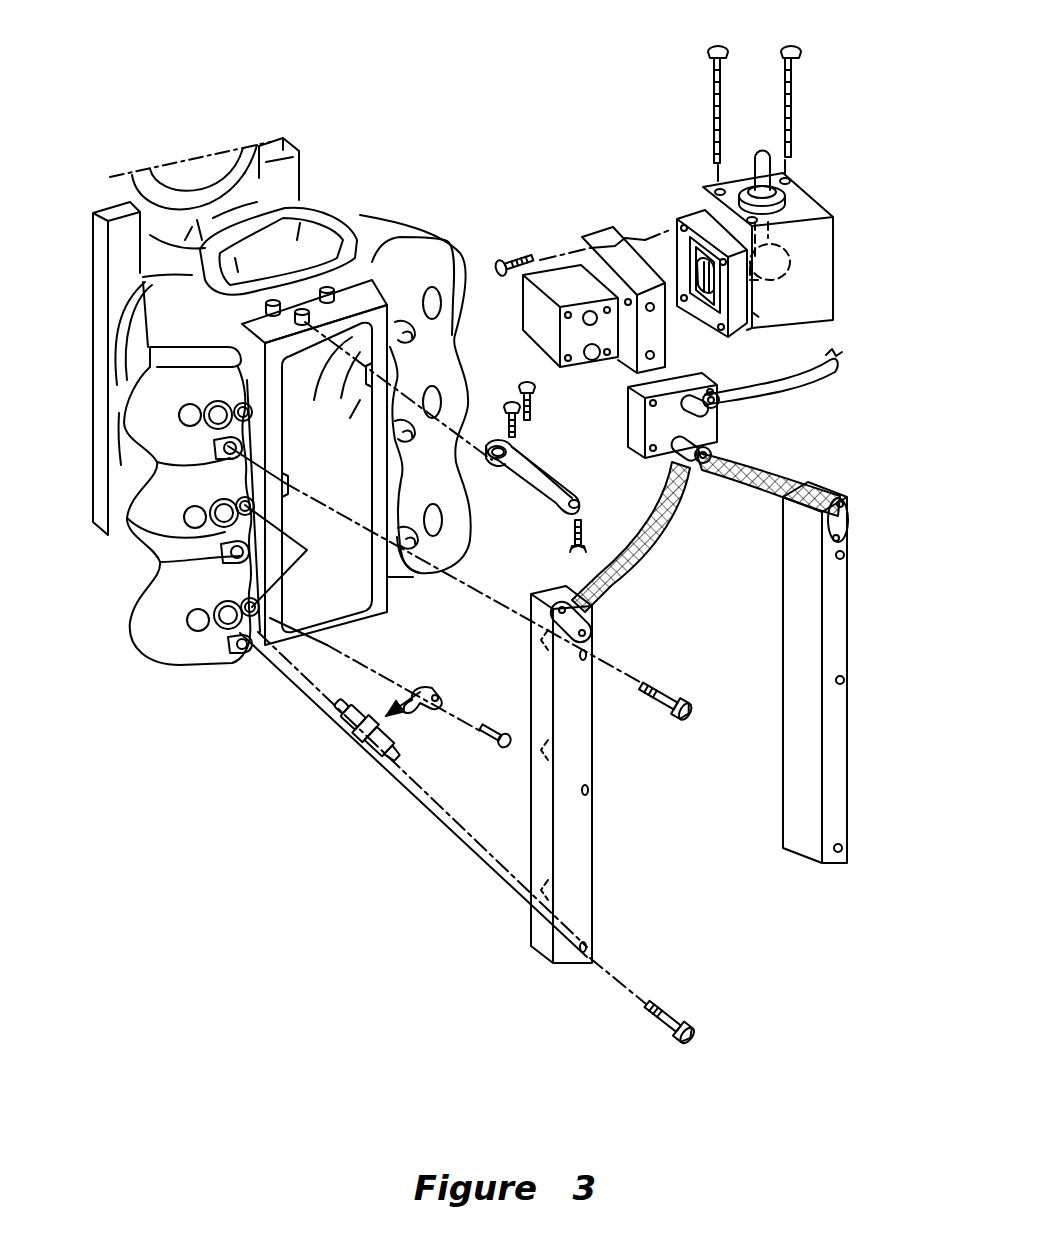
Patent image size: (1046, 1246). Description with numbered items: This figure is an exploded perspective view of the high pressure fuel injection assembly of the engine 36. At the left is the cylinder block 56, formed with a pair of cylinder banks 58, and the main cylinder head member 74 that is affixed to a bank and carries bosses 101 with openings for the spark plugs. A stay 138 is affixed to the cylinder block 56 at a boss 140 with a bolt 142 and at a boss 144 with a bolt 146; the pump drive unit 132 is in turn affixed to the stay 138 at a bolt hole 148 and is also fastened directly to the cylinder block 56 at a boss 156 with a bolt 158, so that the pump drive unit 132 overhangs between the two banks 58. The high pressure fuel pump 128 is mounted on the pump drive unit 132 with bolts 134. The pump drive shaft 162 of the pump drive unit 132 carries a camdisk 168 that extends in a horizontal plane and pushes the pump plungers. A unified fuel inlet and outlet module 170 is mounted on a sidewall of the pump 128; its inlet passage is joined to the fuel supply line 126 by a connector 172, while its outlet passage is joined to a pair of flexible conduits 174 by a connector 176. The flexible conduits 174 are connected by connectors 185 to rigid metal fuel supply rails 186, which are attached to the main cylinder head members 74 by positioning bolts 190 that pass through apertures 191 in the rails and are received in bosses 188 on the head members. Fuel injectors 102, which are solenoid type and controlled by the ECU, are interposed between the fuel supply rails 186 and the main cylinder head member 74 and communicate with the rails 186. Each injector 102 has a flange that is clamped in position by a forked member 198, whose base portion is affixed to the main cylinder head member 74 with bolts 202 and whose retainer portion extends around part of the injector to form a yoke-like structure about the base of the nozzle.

The internal combustion engine 36 is at (446, 190).
The cylinder block 56 is at (365, 278).
The cylinder banks 58 is at (455, 377).
The main cylinder head member 74 is at (185, 662).
The boss 101 is at (238, 510).
The fuel injector 102 is at (350, 737).
The fuel supply line 126 is at (843, 375).
The high pressure fuel pump 128 is at (558, 272).
The pump drive unit 132 is at (812, 190).
The bolts 134 is at (511, 260).
The stay 138 is at (541, 490).
The boss 140 is at (272, 297).
The bolt 142 is at (505, 437).
The boss 144 is at (302, 308).
The bolt 146 is at (527, 413).
The bolt hole 148 is at (578, 507).
The boss 156 is at (328, 283).
The bolt 158 is at (581, 540).
The pump drive shaft 162 is at (760, 150).
The camdisk 168 is at (772, 283).
The fuel inlet and outlet module 170 is at (721, 415).
The connector 172 is at (690, 398).
The flexible conduits 174 is at (667, 548).
The connector 176 is at (710, 449).
The connectors 185 is at (596, 622).
The fuel supply rails 186 is at (793, 728).
The bosses 188 is at (217, 456).
The positioning bolts 190 is at (695, 715).
The apertures 191 is at (590, 655).
The forked member 198 is at (427, 683).
The bolts 202 is at (486, 742).